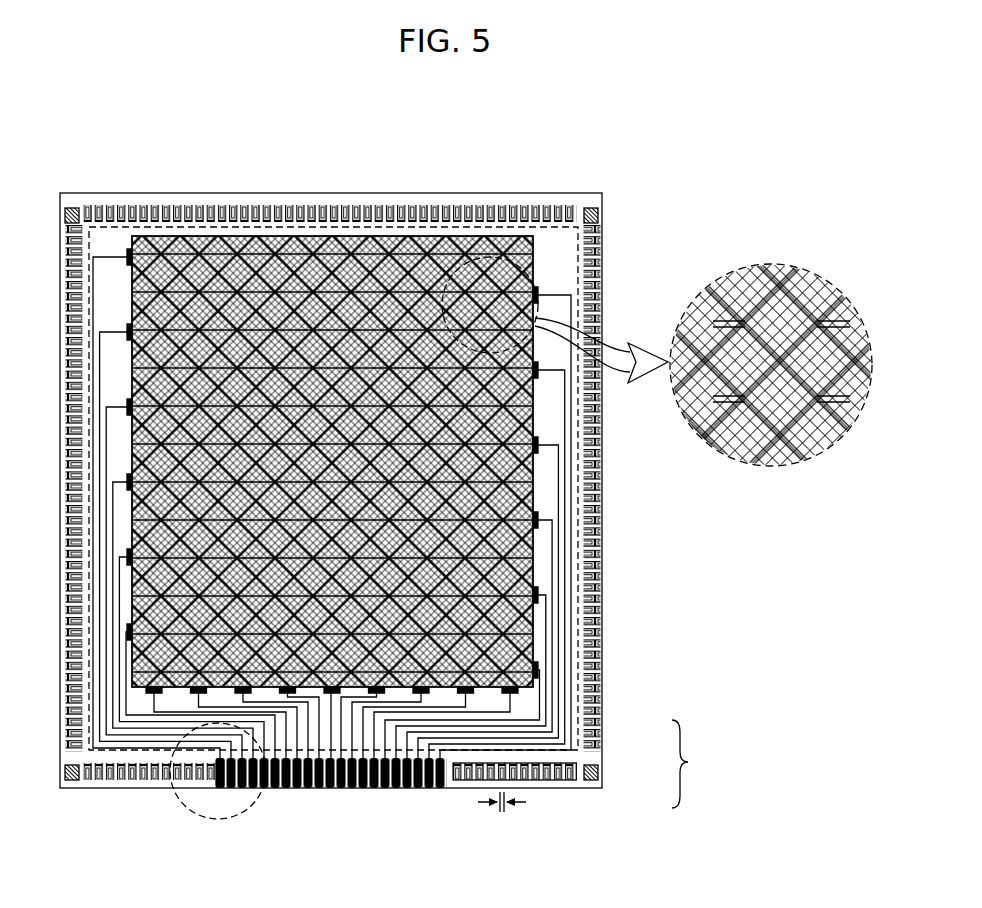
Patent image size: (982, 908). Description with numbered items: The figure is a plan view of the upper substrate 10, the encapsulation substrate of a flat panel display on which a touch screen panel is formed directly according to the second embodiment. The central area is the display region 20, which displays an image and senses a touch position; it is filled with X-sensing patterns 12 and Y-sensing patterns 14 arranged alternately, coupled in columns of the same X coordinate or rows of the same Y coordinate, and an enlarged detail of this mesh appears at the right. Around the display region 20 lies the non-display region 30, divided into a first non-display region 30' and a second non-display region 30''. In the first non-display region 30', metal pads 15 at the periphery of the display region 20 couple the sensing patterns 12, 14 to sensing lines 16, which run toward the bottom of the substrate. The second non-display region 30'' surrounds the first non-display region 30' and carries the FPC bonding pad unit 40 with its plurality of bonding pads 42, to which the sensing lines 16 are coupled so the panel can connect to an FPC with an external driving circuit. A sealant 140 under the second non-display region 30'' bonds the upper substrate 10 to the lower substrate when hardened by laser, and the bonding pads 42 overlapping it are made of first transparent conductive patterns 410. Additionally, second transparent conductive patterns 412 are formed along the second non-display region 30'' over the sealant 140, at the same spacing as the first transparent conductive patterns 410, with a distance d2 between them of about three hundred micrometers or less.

The upper substrate 10 is at (176, 172).
The X-sensing pattern 12 is at (745, 282).
The Y-sensing pattern 14 is at (806, 300).
The metal pad 15 is at (538, 315).
The sensing line 16 is at (556, 292).
The display region 20 is at (275, 226).
The non-display region 30 is at (696, 764).
The first non-display region 30' is at (384, 507).
The second non-display region 30'' is at (567, 785).
The FPC bonding pad unit 40 is at (467, 790).
The bonding pad 42 is at (220, 788).
The sealant 140 is at (71, 782).
The first transparent conductive pattern 410 is at (204, 782).
The second transparent conductive pattern 412 is at (119, 782).
The distance between second transparent conductive patterns d2 is at (503, 831).